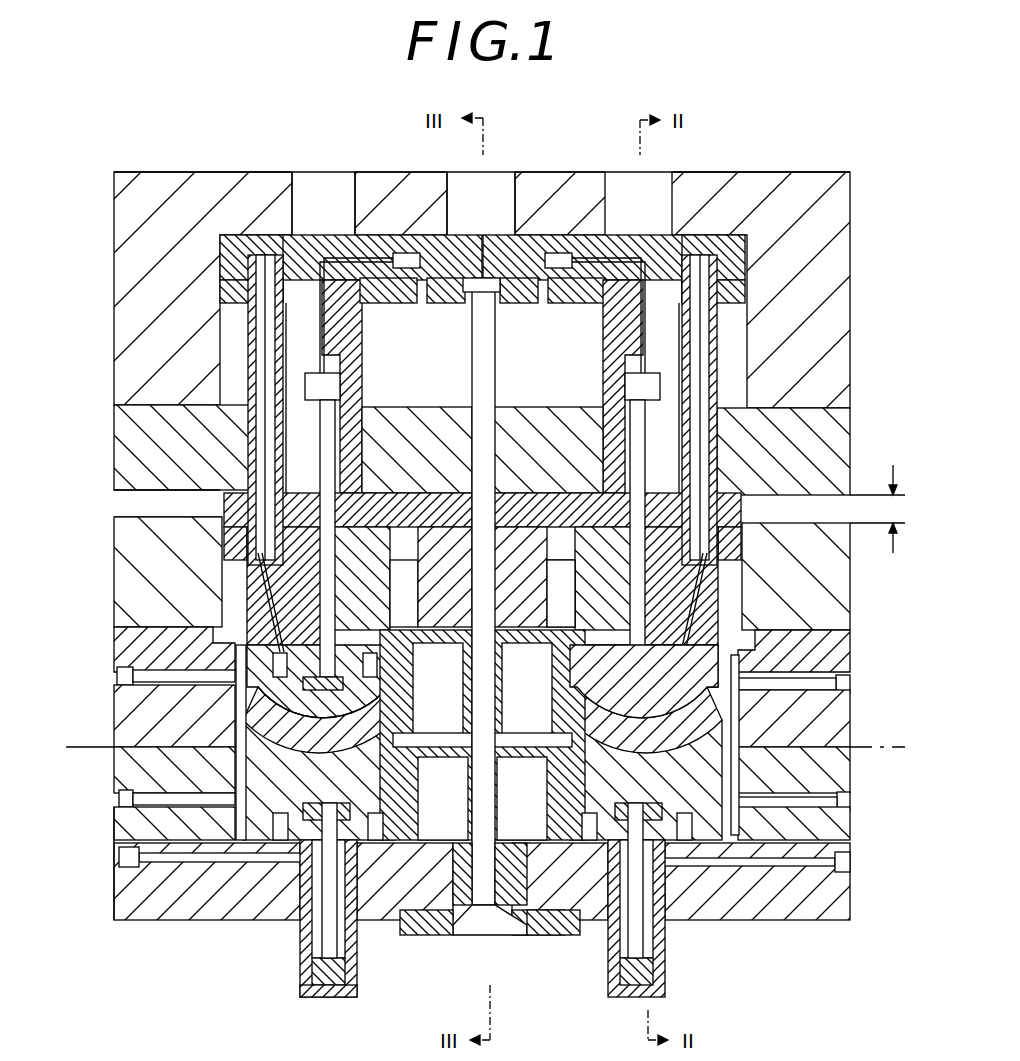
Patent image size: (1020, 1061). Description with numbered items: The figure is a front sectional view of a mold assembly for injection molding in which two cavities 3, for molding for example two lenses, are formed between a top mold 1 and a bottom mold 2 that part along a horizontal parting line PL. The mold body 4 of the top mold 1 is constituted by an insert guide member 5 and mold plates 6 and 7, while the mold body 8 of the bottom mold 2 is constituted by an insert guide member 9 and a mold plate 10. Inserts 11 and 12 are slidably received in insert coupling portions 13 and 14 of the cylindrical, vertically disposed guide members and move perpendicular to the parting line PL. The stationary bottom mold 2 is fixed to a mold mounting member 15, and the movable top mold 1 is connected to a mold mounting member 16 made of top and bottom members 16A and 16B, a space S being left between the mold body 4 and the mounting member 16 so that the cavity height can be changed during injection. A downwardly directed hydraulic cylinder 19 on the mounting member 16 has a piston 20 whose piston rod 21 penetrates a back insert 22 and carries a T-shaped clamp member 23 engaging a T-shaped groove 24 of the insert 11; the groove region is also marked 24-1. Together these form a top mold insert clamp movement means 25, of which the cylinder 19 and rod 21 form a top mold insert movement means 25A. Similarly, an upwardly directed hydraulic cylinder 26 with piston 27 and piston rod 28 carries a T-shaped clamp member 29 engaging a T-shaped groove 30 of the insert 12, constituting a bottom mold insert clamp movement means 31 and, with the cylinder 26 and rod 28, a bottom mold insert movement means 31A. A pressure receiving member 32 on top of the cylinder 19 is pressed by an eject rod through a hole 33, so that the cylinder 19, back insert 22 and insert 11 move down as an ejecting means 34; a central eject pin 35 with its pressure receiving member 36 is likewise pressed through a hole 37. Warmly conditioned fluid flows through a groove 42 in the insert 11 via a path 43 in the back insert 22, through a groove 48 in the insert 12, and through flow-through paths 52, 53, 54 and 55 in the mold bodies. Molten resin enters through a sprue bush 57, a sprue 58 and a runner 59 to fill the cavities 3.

The top mold 1 is at (98, 568).
The bottom mold 2 is at (100, 816).
The cavities 3 is at (288, 900).
The mold body 4 is at (128, 635).
The insert guide member 5 is at (222, 689).
The mold plate 6 is at (118, 652).
The mold plate 7 is at (118, 522).
The mold body 8 is at (140, 826).
The insert guide member 9 is at (228, 752).
The mold plate 10 is at (136, 884).
The insert 11 is at (232, 708).
The insert 12 is at (224, 778).
The insert coupling portion 13 is at (250, 738).
The insert coupling portion 14 is at (338, 705).
The mold mounting member 15 is at (205, 900).
The mold mounting member 16 is at (120, 302).
The top member 16A is at (120, 366).
The bottom member 16B is at (122, 424).
The hydraulic cylinder 19 is at (368, 415).
The piston 20 is at (338, 385).
The piston rod 21 is at (262, 424).
The back insert 22 is at (285, 598).
The T-shaped clamp member 23 is at (615, 640).
The T-shaped groove 24 is at (284, 738).
The upper die core 24-1 is at (672, 705).
The top mold insert clamp movement means 25 is at (262, 402).
The top mold insert movement means 25A is at (272, 460).
The hydraulic cylinder 26 is at (322, 997).
The piston 27 is at (318, 970).
The piston rod 28 is at (320, 930).
The T-shaped clamp member 29 is at (335, 805).
The T-shaped groove 30 is at (320, 695).
The bottom mold insert clamp movement means 31 is at (360, 978).
The bottom mold insert movement means 31A is at (431, 976).
The pressure receiving member 32 is at (283, 240).
The hole 33 is at (345, 200).
The ejecting means 34 is at (408, 338).
The eject pin 35 is at (490, 510).
The pressure receiving member 36 is at (528, 237).
The hole 37 is at (447, 200).
The flow-through groove 42 is at (268, 626).
The path 43 is at (262, 576).
The flow-through groove 48 is at (262, 900).
The flow-through path 52 is at (216, 652).
The flow-through path 53 is at (432, 632).
The flow-through path 54 is at (180, 870).
The flow-through path 55 is at (438, 935).
The sprue bush 57 is at (505, 935).
The sprue 58 is at (500, 790).
The runner 59 is at (446, 740).
The parting line PL is at (470, 747).
The space S is at (828, 547).